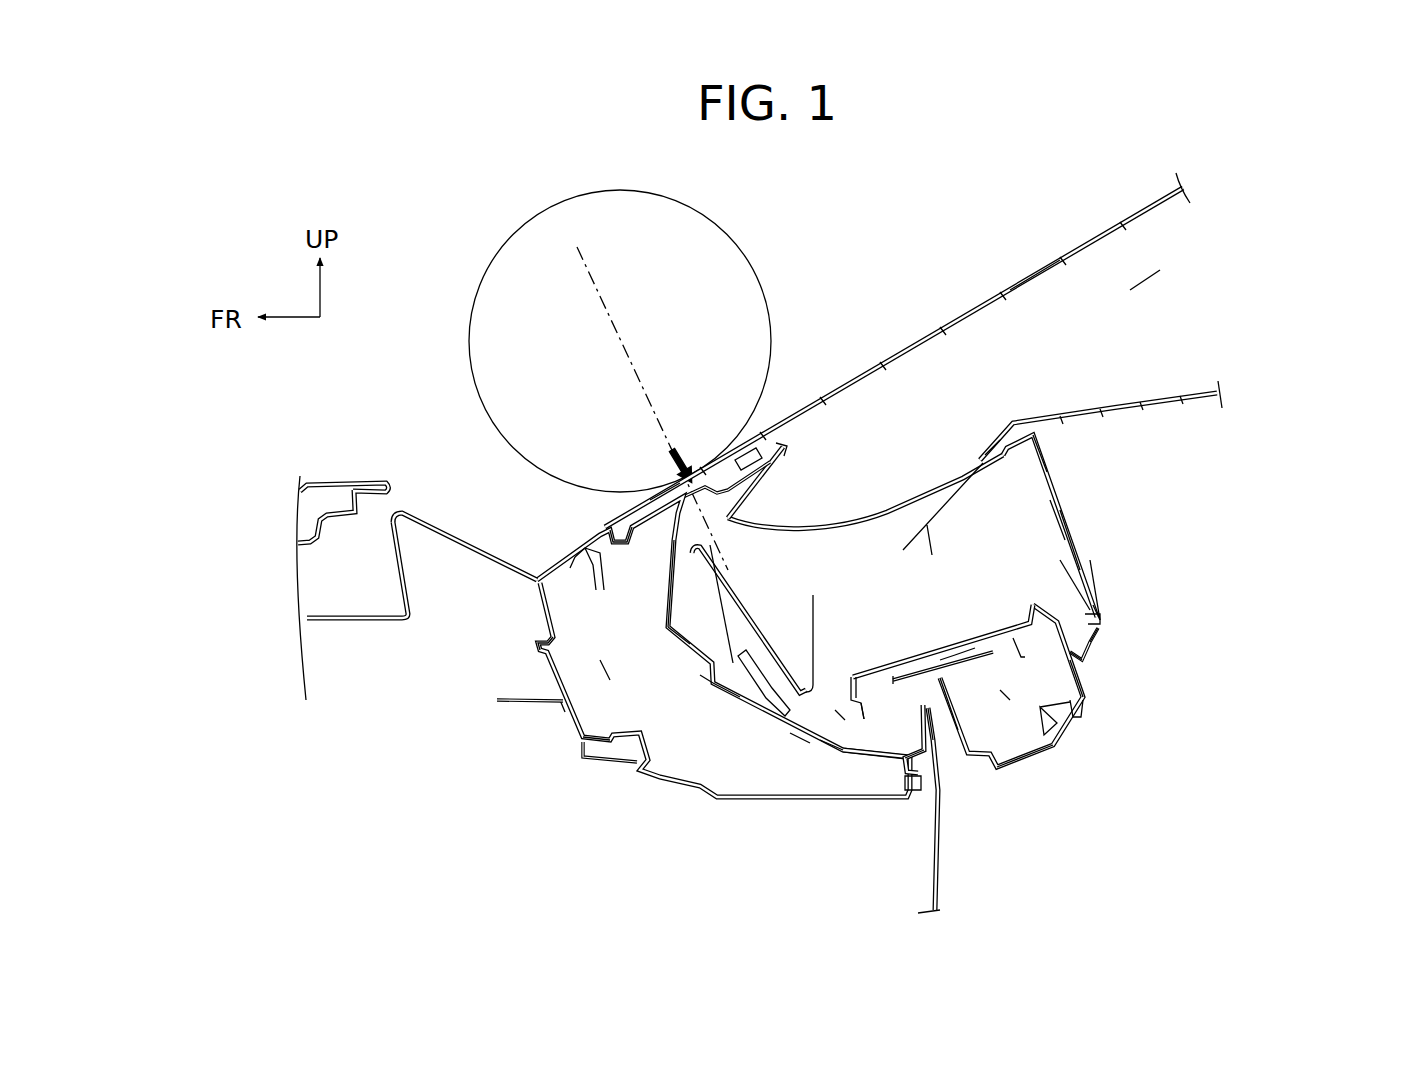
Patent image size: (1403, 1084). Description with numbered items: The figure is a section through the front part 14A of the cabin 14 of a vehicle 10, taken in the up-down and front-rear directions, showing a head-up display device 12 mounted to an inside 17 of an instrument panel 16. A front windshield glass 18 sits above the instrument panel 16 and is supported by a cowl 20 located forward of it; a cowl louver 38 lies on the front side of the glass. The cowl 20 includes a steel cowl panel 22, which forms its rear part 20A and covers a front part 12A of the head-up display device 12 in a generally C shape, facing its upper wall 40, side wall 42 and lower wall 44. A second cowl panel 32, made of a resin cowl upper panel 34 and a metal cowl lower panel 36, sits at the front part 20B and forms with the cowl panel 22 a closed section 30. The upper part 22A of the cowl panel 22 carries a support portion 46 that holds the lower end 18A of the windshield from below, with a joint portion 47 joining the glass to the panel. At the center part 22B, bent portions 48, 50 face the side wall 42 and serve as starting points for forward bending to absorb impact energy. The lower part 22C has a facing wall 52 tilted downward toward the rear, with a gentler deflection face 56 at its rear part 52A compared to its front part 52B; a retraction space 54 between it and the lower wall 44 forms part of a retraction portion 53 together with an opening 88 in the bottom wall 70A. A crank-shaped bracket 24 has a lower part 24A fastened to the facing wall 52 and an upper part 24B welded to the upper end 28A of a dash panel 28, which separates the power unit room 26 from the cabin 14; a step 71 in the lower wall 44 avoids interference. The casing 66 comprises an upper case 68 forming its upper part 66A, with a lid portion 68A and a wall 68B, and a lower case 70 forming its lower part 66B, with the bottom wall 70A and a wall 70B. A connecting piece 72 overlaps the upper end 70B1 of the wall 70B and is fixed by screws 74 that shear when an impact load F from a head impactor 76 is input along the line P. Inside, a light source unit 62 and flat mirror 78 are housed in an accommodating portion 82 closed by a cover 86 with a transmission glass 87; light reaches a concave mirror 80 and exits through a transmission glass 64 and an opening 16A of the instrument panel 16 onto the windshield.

The vehicle 10 is at (1033, 212).
The head-up display device 12 is at (1157, 585).
The front part of the head-up display device 12A is at (794, 518).
The cabin 14 is at (1216, 266).
The front part of the cabin 14A is at (1290, 270).
The instrument panel 16 is at (1152, 397).
The opening of the instrument panel 16A is at (988, 450).
The inside of the instrument panel 17 is at (1280, 570).
The front windshield glass 18 is at (970, 308).
The lower end of the front windshield glass 18A is at (663, 490).
The cowl 20 is at (768, 808).
The rear part of the cowl 20A is at (823, 760).
The front part of the cowl 20B is at (598, 773).
The cowl panel 22 is at (724, 699).
The upper part of the cowl panel 22A is at (643, 522).
The center part of the cowl panel 22B is at (711, 688).
The lower part of the cowl panel 22C is at (797, 738).
The bracket 24 is at (927, 878).
The lower part of the bracket 24A is at (925, 742).
The upper part of the bracket 24B is at (875, 762).
The power unit room 26 is at (613, 881).
The dash panel 28 is at (937, 888).
The upper end of the dash panel 28A is at (930, 727).
The closed section 30 is at (633, 685).
The cowl panel 32 is at (477, 703).
The cowl upper panel 34 is at (537, 647).
The cowl lower panel 36 is at (563, 710).
The cowl louver 38 is at (448, 546).
The upper wall of the head-up display device 40 is at (677, 555).
The side wall of the head-up display device 42 is at (683, 592).
The lower wall of the head-up display device 44 is at (876, 700).
The support portion 46 is at (750, 462).
The joint portion 47 is at (705, 483).
The bent portion 48 is at (666, 632).
The bent portion 50 is at (712, 683).
The facing wall 52 is at (827, 740).
The rear part of the facing wall 52A is at (870, 688).
The front part of the facing wall 52B is at (767, 662).
The retraction portion 53 is at (752, 702).
The retraction space 54 is at (760, 762).
The deflection face 56 is at (912, 663).
The light source unit 62 is at (1057, 738).
The transmission glass 64 is at (845, 520).
The casing 66 is at (1060, 490).
The upper part of the casing 66A is at (1065, 516).
The lower part of the casing 66B is at (1093, 697).
The upper case 68 is at (1085, 565).
The lid portion 68A is at (972, 467).
The wall 68B is at (1047, 462).
The lower case 70 is at (1087, 700).
The bottom wall 70A is at (1013, 757).
The wall 70B is at (1103, 637).
The upper end of the wall 70B1 is at (1100, 627).
The step 71 is at (958, 732).
The connecting piece 72 is at (1095, 613).
The screws 74 is at (1102, 616).
The head impactor 76 is at (700, 225).
The flat mirror 78 is at (968, 645).
The concave mirror 80 is at (737, 590).
The accommodating portion 82 is at (1015, 725).
The cover 86 is at (980, 640).
The transmission glass 87 is at (947, 647).
The opening 88 is at (826, 589).
The long dashed short dashed line P is at (612, 322).
The impact load F is at (684, 452).